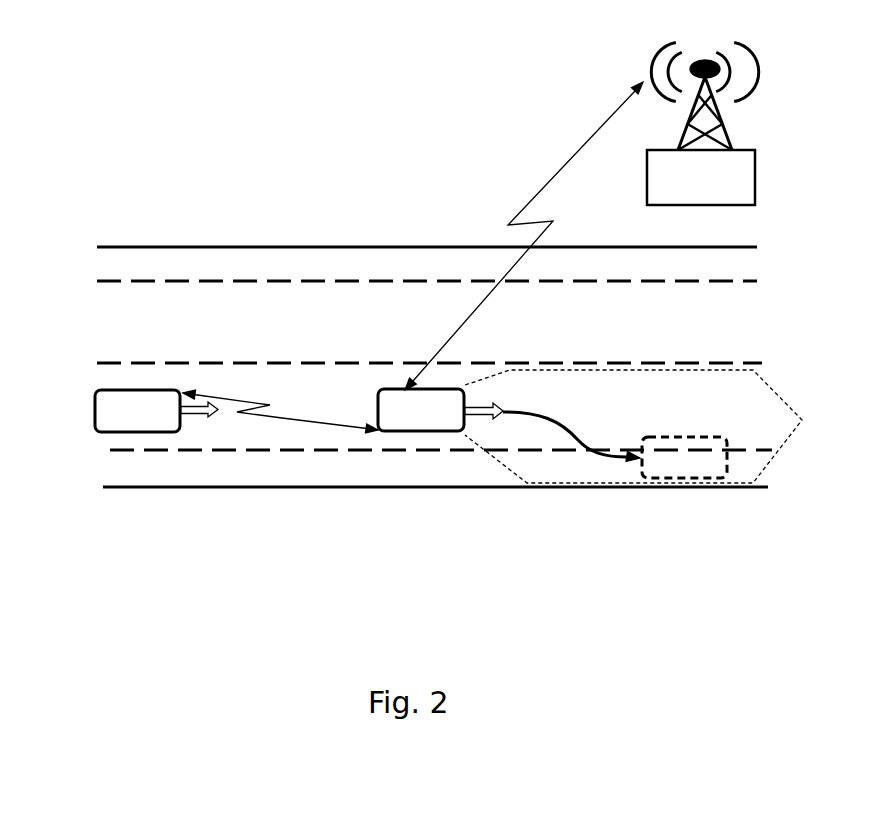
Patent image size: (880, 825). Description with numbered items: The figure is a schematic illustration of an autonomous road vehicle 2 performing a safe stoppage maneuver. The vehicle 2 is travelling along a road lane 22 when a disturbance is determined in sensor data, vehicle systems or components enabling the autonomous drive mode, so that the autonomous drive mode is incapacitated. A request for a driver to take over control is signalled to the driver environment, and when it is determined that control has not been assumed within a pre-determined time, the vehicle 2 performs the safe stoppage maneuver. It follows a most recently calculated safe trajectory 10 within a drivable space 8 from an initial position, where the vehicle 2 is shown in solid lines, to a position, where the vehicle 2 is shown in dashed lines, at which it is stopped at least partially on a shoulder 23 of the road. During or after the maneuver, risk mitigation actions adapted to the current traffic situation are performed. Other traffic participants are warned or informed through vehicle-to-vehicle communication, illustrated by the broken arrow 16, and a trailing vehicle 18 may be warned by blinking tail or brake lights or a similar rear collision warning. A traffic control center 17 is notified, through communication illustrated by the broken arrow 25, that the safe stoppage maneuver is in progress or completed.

The autonomous road vehicle 2 is at (413, 423).
The drivable space 8 is at (507, 467).
The safe trajectory 10 is at (570, 435).
The broken arrow 16 is at (280, 418).
The traffic control center 17 is at (688, 191).
The trailing vehicle 18 is at (124, 423).
The road lane 22 is at (87, 283).
The shoulder 23 is at (87, 250).
The broken arrow 25 is at (565, 160).